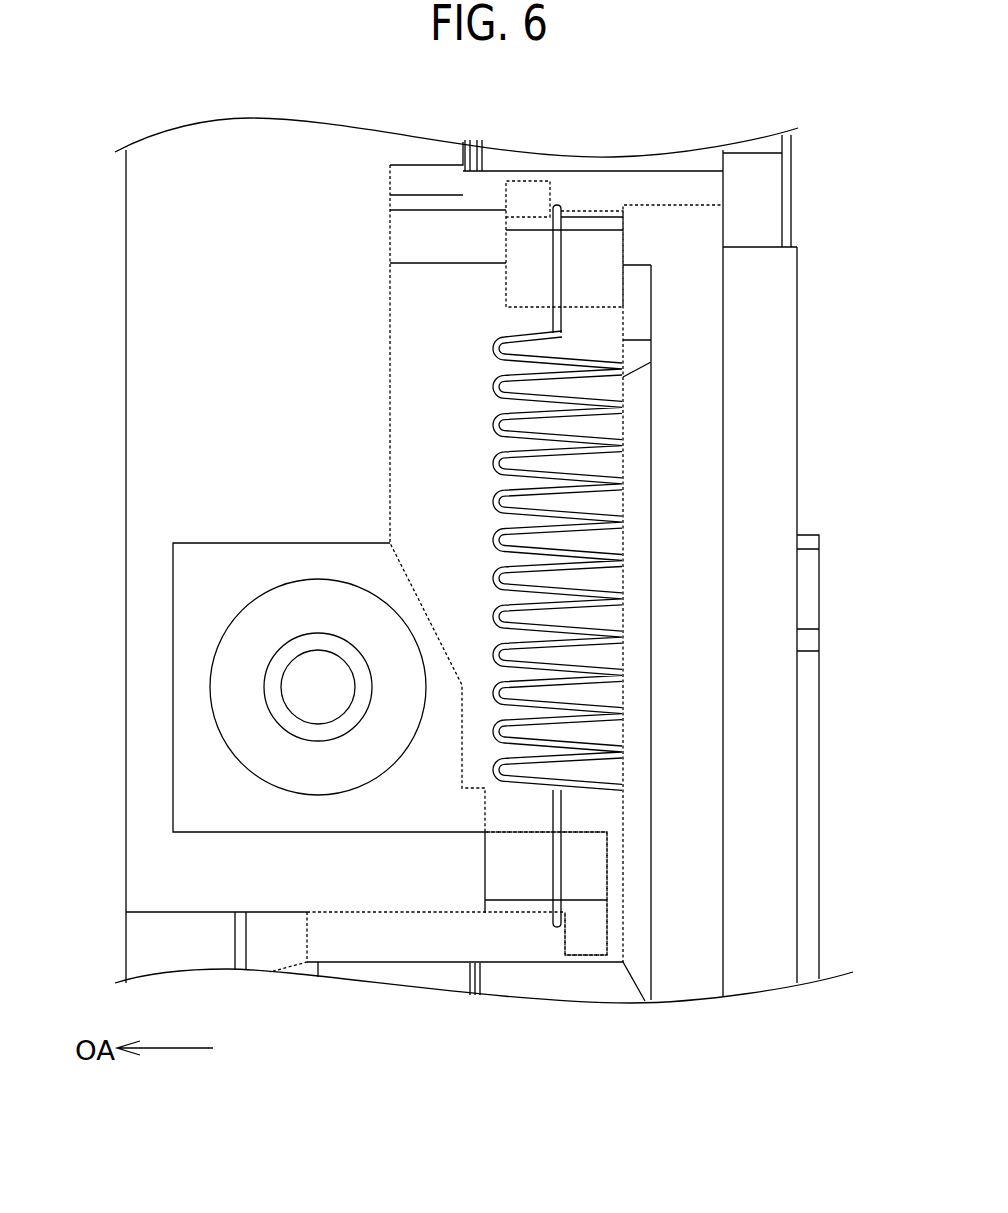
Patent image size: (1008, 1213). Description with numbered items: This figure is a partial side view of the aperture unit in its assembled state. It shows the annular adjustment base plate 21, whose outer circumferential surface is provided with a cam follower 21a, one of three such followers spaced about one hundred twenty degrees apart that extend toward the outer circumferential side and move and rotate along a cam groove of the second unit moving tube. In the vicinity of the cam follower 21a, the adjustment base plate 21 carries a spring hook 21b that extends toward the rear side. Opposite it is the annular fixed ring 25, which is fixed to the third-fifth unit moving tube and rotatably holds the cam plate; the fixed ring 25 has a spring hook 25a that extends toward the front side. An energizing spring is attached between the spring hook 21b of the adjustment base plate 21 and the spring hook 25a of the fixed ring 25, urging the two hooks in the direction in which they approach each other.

The adjustment base plate 21 is at (148, 361).
The cam follower 21a is at (227, 670).
The spring hook 21b is at (522, 883).
The fixed ring 25 is at (780, 396).
The spring hook 25a is at (528, 190).